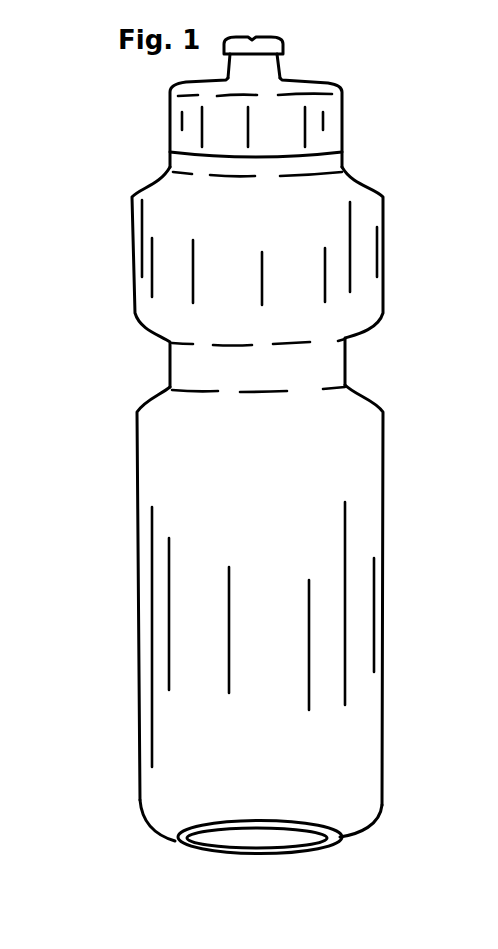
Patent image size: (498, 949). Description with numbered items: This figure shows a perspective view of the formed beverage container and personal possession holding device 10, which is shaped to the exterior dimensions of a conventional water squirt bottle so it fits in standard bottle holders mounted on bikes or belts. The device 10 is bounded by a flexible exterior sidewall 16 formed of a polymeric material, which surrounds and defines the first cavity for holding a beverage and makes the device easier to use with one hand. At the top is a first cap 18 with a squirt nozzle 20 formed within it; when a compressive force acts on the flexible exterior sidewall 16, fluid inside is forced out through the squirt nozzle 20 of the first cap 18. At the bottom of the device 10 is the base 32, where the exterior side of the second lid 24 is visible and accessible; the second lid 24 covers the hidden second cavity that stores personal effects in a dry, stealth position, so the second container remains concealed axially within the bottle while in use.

The formed beverage container and personal possession holding device 10 is at (149, 362).
The flexible exterior sidewall 16 is at (228, 515).
The first cap 18 is at (333, 105).
The squirt nozzle 20 is at (252, 41).
The second lid 24 is at (273, 843).
The base 32 is at (173, 841).